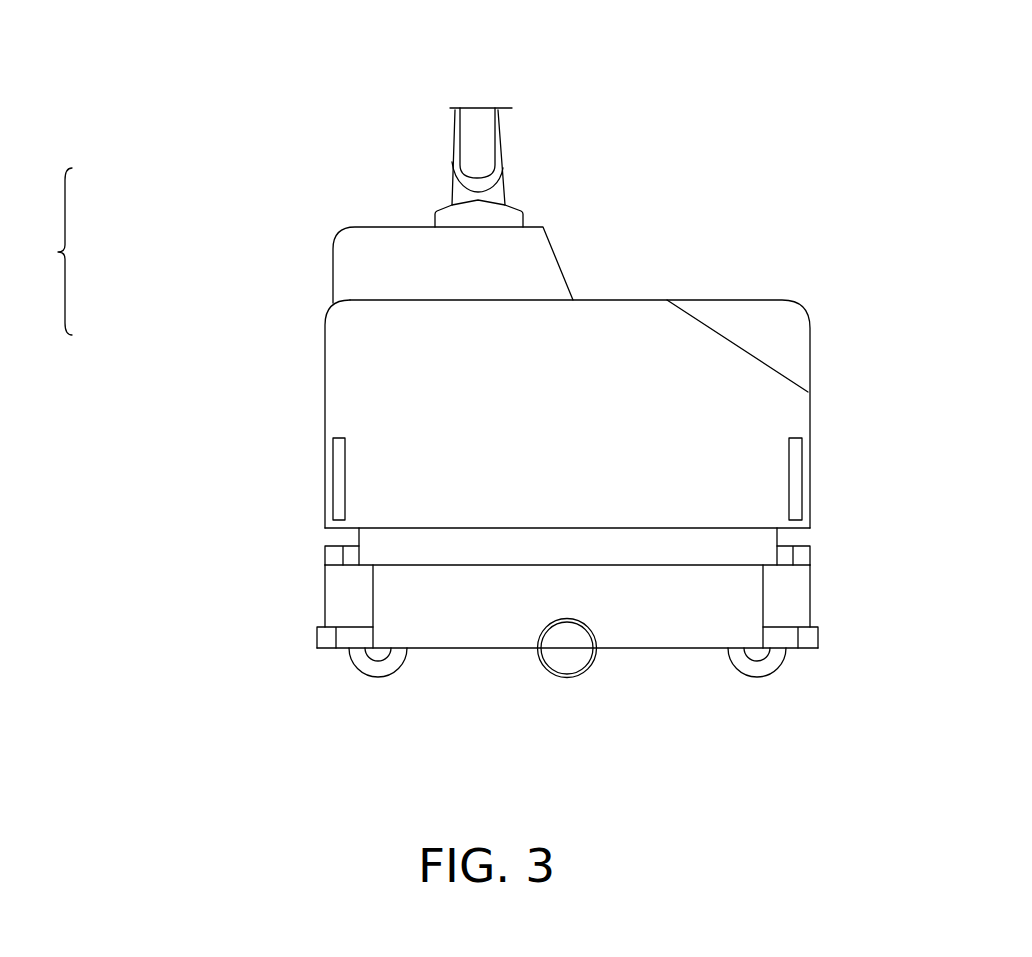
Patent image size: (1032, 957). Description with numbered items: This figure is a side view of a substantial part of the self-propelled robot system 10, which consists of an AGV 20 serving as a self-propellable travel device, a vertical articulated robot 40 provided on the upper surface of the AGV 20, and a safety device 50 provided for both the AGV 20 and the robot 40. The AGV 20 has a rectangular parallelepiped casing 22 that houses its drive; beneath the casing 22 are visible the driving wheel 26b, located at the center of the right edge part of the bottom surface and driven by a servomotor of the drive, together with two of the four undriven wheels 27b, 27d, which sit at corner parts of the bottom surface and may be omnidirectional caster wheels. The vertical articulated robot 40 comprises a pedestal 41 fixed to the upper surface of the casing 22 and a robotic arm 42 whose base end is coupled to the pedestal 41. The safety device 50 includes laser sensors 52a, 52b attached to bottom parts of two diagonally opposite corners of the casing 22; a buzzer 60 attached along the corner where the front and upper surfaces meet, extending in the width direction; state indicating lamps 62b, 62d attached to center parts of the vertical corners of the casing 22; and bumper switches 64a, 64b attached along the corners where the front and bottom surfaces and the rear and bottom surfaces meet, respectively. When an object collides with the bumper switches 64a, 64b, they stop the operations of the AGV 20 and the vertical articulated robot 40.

The self-propelled robot system 10 is at (476, 387).
The AGV 20 is at (567, 350).
The casing 22 is at (516, 450).
The driving wheel 26b is at (541, 686).
The wheel 27b is at (358, 701).
The wheel 27d is at (739, 701).
The vertical articulated robot 40 is at (481, 162).
The pedestal 41 is at (416, 228).
The robotic arm 42 is at (547, 141).
The safety device 50 is at (107, 251).
The laser sensor 52a is at (855, 538).
The laser sensor 52b is at (279, 538).
The buzzer 60 is at (789, 321).
The state indicating lamp 62b is at (858, 479).
The state indicating lamp 62d is at (276, 479).
The bumper switch 64a is at (848, 646).
The bumper switch 64b is at (285, 646).